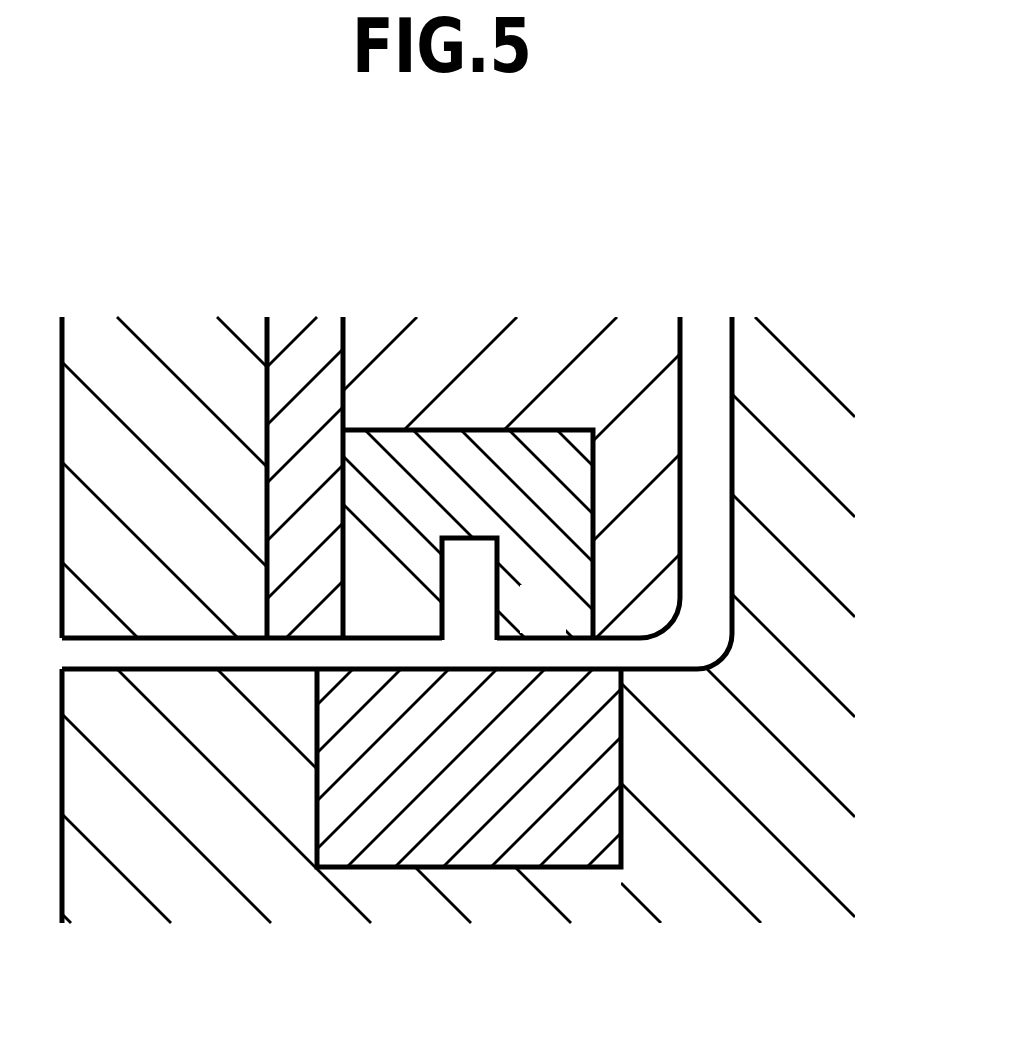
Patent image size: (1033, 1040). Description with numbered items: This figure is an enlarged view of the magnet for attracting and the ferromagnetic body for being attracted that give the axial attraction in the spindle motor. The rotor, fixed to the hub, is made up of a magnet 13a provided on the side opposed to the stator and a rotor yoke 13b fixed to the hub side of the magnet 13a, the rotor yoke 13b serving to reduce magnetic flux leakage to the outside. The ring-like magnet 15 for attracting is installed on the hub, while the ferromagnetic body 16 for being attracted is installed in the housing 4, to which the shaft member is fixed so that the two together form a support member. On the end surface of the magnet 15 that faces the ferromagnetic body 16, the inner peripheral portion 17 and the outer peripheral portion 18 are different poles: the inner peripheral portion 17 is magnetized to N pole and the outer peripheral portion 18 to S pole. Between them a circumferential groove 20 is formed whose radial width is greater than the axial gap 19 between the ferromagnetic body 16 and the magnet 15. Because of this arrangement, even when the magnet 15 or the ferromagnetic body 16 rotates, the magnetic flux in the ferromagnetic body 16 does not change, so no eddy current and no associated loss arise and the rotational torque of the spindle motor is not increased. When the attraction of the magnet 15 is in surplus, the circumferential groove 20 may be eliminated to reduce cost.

The housing 4 is at (200, 885).
The magnet 13a is at (162, 400).
The rotor yoke 13b is at (316, 358).
The magnet for attracting 15 is at (525, 472).
The ferromagnetic body for being attracted 16 is at (577, 853).
The inner peripheral portion 17 is at (443, 627).
The outer peripheral portion 18 is at (580, 587).
The axial gap 19 is at (380, 655).
The circumferential groove 20 is at (465, 555).